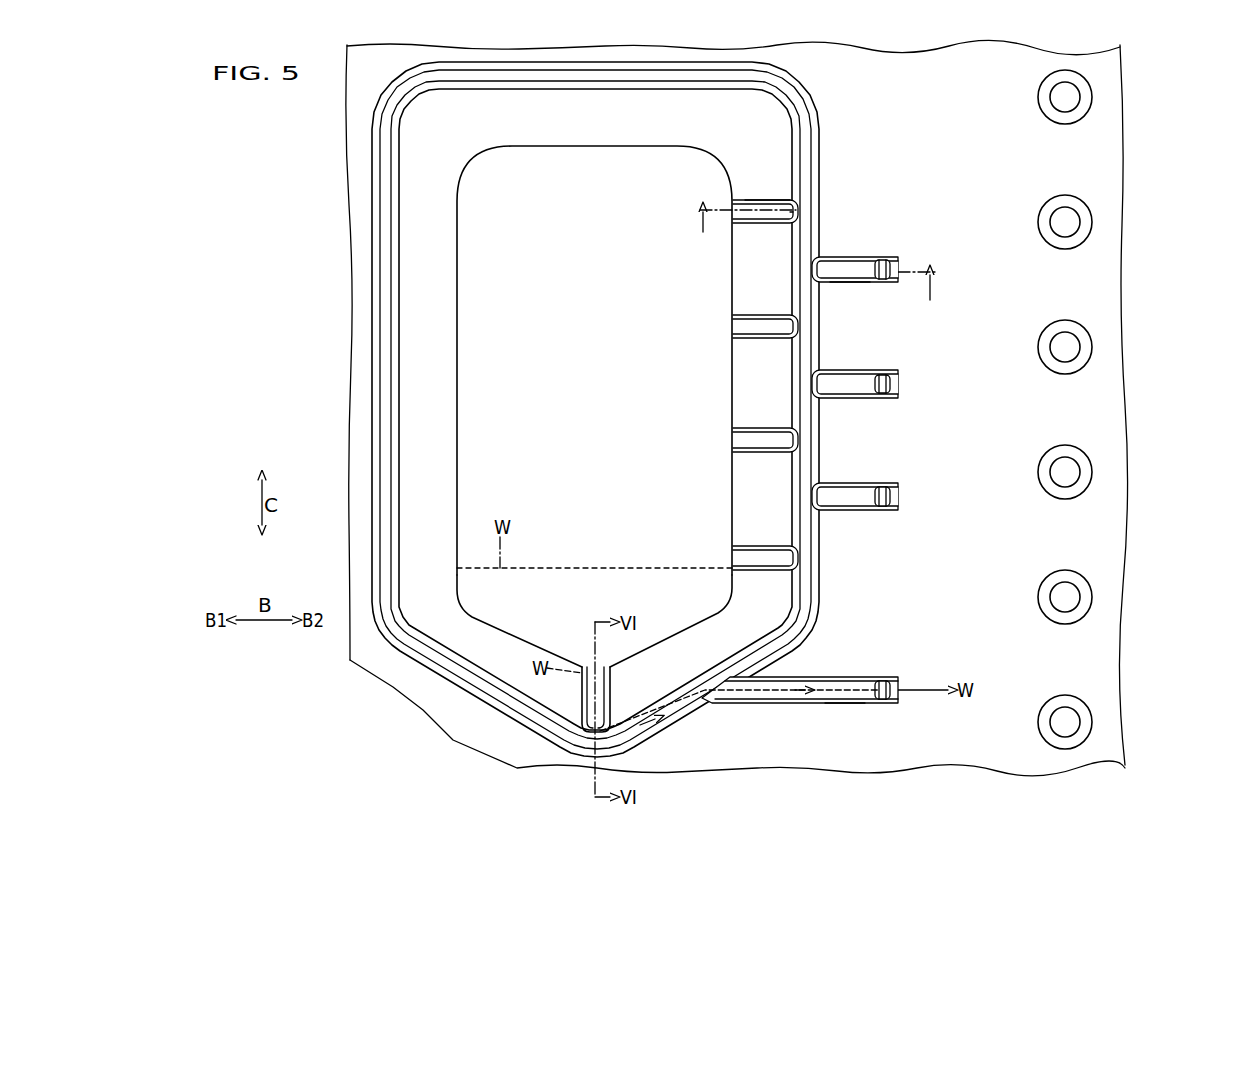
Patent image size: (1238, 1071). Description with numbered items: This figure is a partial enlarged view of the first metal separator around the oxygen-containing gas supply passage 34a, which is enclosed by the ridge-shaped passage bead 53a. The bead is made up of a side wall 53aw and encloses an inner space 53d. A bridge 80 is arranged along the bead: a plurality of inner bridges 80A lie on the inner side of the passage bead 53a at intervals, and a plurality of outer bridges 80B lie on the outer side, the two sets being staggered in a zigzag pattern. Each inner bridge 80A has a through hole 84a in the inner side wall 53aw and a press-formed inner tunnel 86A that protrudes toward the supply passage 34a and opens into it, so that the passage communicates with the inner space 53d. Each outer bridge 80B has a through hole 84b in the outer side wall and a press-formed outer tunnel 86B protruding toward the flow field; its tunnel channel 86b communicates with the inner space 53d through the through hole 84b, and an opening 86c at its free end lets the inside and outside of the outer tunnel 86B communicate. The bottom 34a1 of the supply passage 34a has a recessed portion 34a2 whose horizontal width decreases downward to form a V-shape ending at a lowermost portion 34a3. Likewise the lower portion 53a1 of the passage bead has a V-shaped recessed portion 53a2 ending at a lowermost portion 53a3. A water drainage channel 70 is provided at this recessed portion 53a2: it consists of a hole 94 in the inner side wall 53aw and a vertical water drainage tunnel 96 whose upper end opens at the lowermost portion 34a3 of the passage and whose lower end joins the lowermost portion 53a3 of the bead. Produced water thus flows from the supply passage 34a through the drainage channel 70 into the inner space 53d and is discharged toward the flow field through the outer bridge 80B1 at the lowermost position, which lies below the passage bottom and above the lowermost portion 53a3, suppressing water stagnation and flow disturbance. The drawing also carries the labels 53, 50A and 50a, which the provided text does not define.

The oxygen-containing gas supply passage 34a is at (487, 252).
The bottom 34a1 is at (594, 621).
The recessed portion 34a2 is at (506, 624).
The lowermost portion 34a3 is at (593, 665).
The bolt hole 50A is at (1135, 409).
The bolt hole 50a is at (1070, 97).
The seal member 53 is at (537, 410).
The passage bead 53a is at (537, 410).
The lower portion 53a1 is at (548, 416).
The recessed portion 53a2 is at (470, 683).
The lowermost portion 53a3 is at (600, 758).
The side wall 53aw is at (797, 361).
The inner space 53d is at (808, 298).
The water drainage channel 70 is at (608, 706).
The bridge 80 is at (784, 432).
The inner bridges 80A is at (766, 197).
The outer bridges 80B is at (835, 469).
The outer bridge at the lowermost position 80B1 is at (840, 672).
The through hole 84a is at (793, 214).
The through hole 84b is at (818, 267).
The inner tunnel 86A is at (752, 200).
The outer tunnel 86B is at (853, 283).
The tunnel channel 86b is at (840, 704).
The opening 86c is at (882, 258).
The hole 94 is at (585, 716).
The water drainage tunnel 96 is at (605, 697).